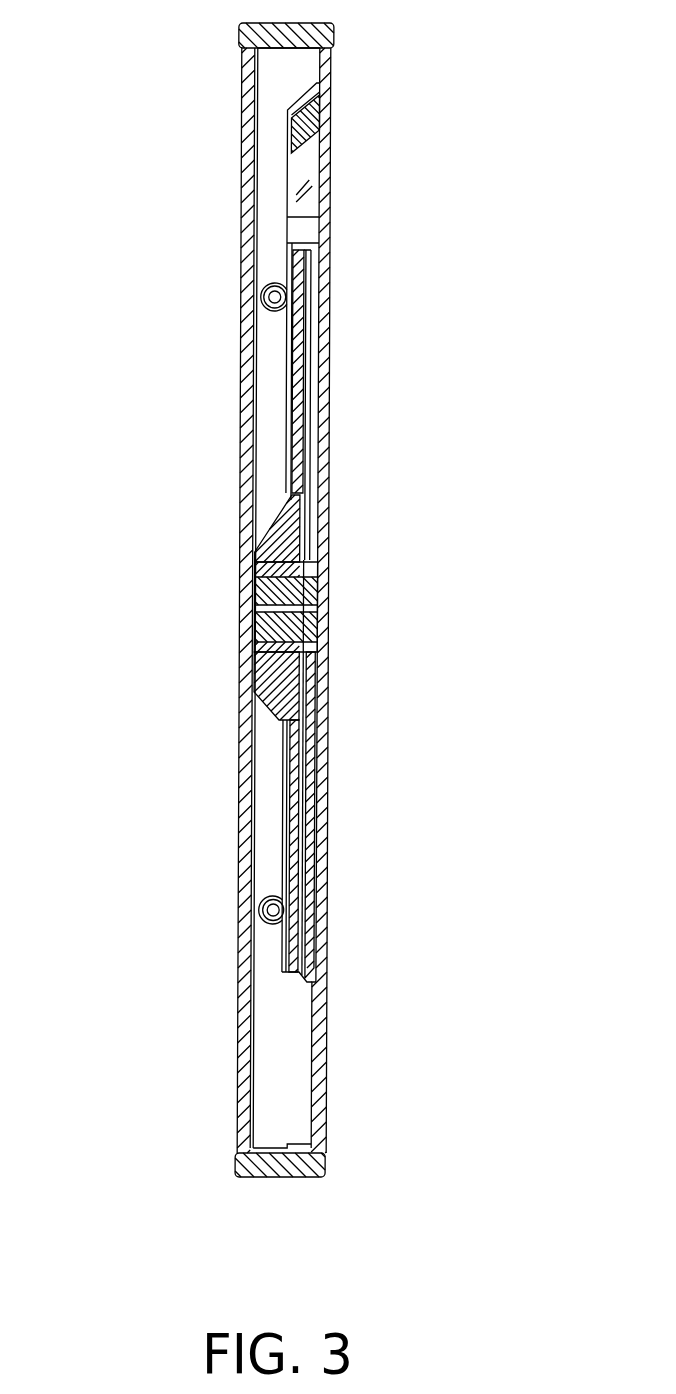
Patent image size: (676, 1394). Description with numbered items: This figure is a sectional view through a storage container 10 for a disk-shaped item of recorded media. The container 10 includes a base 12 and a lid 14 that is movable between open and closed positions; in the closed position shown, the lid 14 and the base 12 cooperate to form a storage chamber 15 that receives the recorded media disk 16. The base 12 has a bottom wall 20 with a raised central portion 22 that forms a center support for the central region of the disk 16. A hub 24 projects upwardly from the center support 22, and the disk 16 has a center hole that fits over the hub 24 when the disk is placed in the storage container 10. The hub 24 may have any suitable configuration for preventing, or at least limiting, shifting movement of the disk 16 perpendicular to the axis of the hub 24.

The storage container 10 is at (205, 96).
The base 12 is at (327, 1070).
The lid 14 is at (235, 1046).
The storage chamber 15 is at (280, 1100).
The recorded media disk 16 is at (297, 822).
The bottom wall 20 is at (328, 241).
The raised central portion 22 is at (327, 682).
The hub 24 is at (280, 565).